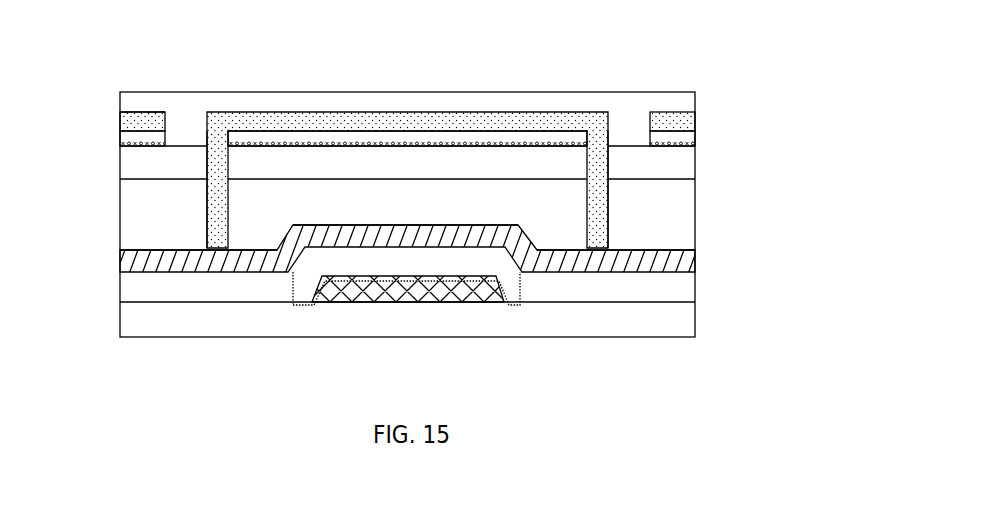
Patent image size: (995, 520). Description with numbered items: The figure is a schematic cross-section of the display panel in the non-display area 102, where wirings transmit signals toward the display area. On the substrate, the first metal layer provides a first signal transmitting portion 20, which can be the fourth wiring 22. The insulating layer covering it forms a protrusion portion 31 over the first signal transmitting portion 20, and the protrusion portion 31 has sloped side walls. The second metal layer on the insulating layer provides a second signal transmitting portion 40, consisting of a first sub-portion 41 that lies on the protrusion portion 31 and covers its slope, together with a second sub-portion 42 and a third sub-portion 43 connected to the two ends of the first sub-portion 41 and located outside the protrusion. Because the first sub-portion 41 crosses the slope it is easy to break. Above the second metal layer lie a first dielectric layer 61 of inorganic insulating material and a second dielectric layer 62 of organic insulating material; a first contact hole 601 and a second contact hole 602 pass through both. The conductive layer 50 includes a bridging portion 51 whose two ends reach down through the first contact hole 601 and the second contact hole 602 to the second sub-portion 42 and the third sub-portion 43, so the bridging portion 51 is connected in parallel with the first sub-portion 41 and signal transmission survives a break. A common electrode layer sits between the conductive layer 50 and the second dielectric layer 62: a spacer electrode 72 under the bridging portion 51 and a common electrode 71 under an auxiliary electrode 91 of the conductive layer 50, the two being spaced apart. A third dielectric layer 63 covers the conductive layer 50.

The non-display area 102 is at (651, 63).
The auxiliary electrode 91 is at (144, 124).
The conductive layer 50 is at (411, 157).
The spacer electrode 72 is at (268, 136).
The bridging portion 51 is at (411, 157).
The third dielectric layer 63 is at (680, 106).
The common electrode 71 is at (693, 138).
The second dielectric layer 62 is at (675, 171).
The first contact hole 601 is at (206, 208).
The second contact hole 602 is at (609, 206).
The first dielectric layer 61 is at (678, 224).
The third sub-portion 43 is at (690, 259).
The second signal transmitting portion 40 is at (409, 248).
The first sub-portion 41 is at (303, 233).
The second sub-portion 42 is at (147, 261).
The protrusion portion 31 is at (305, 278).
The fourth wiring 22 is at (452, 291).
The first signal transmitting portion 20 is at (421, 320).